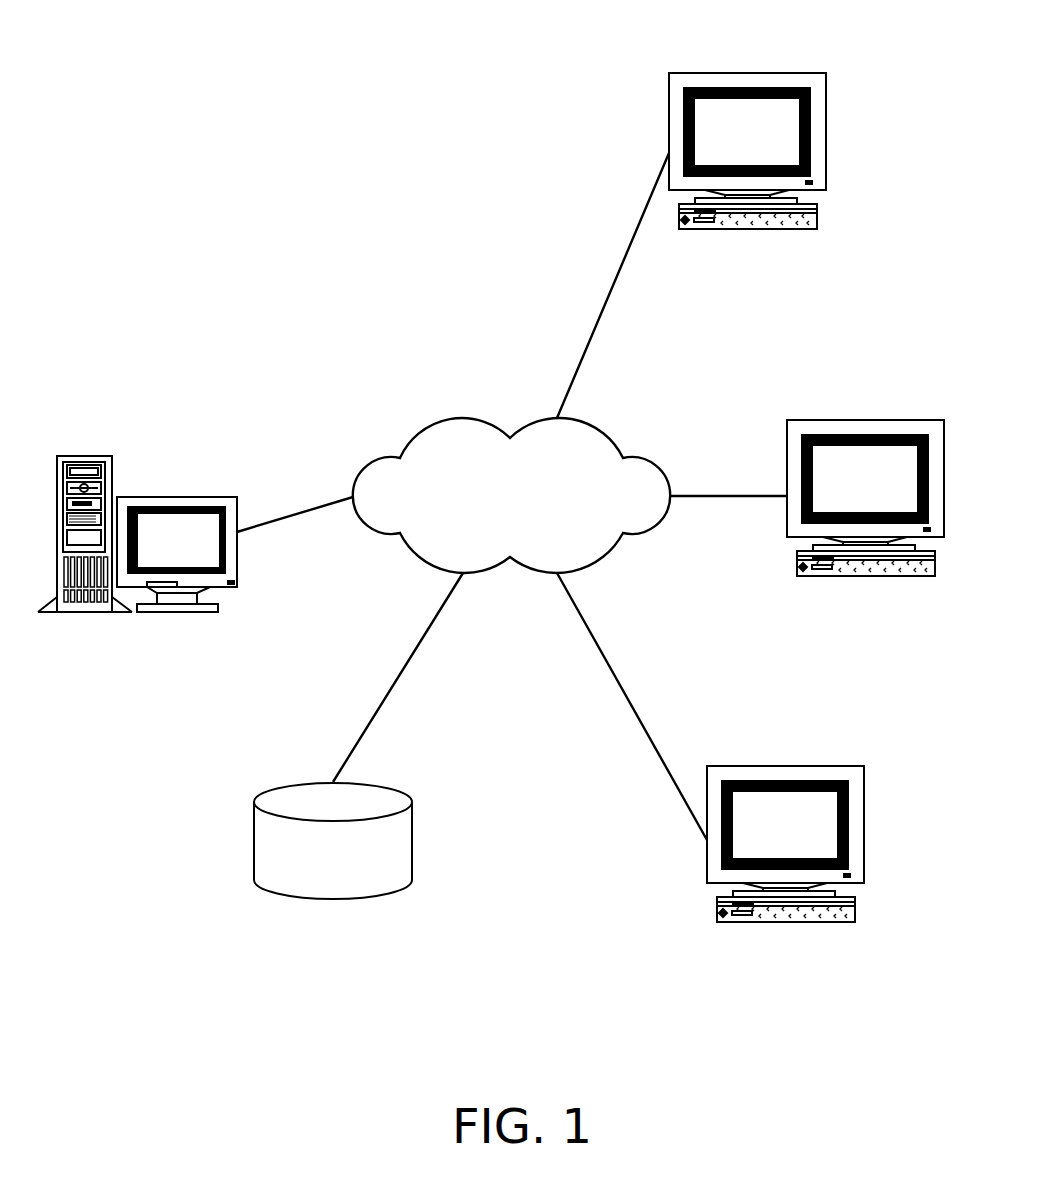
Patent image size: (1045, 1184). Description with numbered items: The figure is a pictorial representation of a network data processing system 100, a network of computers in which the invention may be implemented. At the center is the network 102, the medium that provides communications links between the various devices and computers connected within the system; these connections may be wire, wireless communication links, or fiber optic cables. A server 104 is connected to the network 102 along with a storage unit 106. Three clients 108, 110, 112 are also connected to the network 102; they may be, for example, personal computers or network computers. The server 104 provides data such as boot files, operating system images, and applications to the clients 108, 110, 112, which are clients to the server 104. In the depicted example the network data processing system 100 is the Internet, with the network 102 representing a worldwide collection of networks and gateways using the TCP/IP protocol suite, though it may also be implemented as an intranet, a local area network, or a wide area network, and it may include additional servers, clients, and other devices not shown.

The network data processing system 100 is at (488, 846).
The network 102 is at (462, 418).
The server 104 is at (137, 500).
The storage unit 106 is at (312, 887).
The client 108 is at (680, 82).
The client 110 is at (798, 430).
The client 112 is at (855, 777).